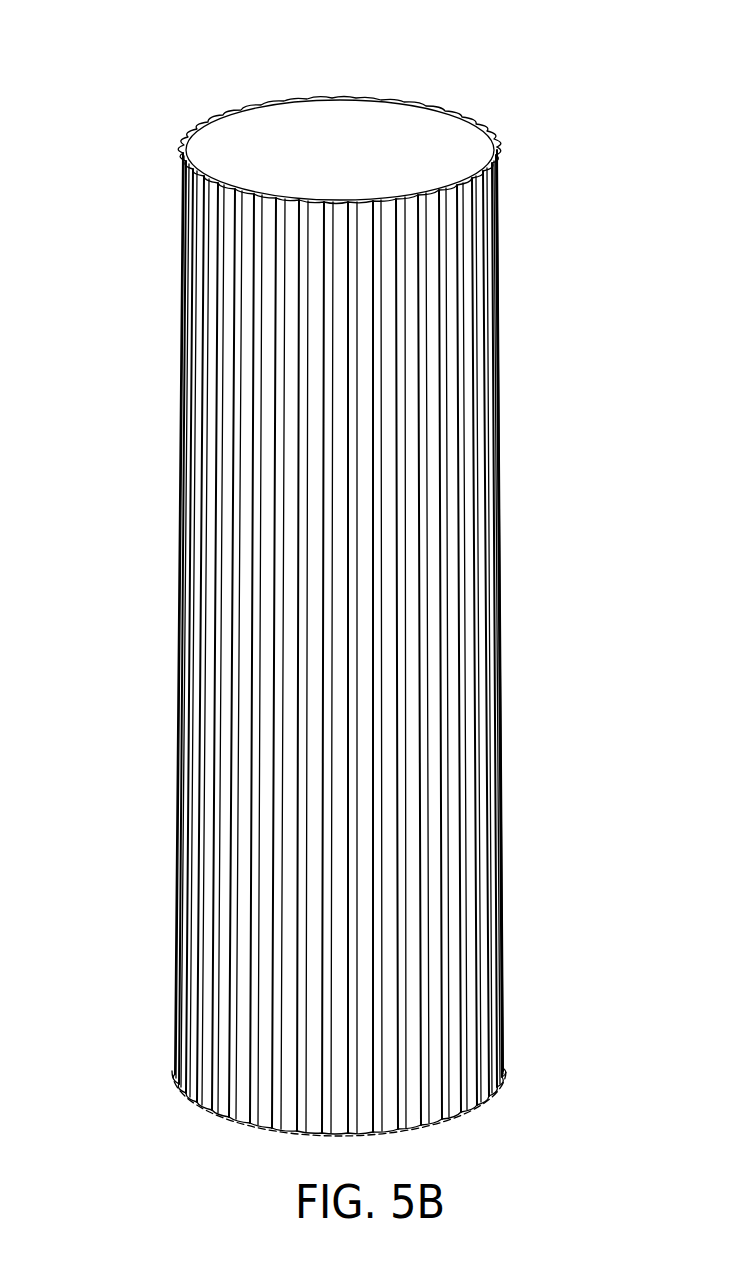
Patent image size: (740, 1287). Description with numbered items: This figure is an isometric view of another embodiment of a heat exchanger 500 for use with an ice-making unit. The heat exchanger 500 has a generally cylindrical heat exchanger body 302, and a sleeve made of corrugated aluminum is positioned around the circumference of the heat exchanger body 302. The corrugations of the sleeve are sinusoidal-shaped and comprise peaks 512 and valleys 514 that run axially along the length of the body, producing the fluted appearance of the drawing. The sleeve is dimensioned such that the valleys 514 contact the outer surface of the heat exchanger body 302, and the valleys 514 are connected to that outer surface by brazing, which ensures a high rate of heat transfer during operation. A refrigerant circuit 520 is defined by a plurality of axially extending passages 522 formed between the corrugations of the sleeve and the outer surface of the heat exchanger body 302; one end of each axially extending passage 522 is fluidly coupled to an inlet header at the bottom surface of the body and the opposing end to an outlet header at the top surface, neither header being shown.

The heat exchanger 500 is at (333, 575).
The heat exchanger body 302 is at (267, 128).
The refrigerant circuit 520 is at (373, 199).
The axially extending passage 522 is at (457, 188).
The valley 514 is at (185, 183).
The peak 512 is at (223, 193).